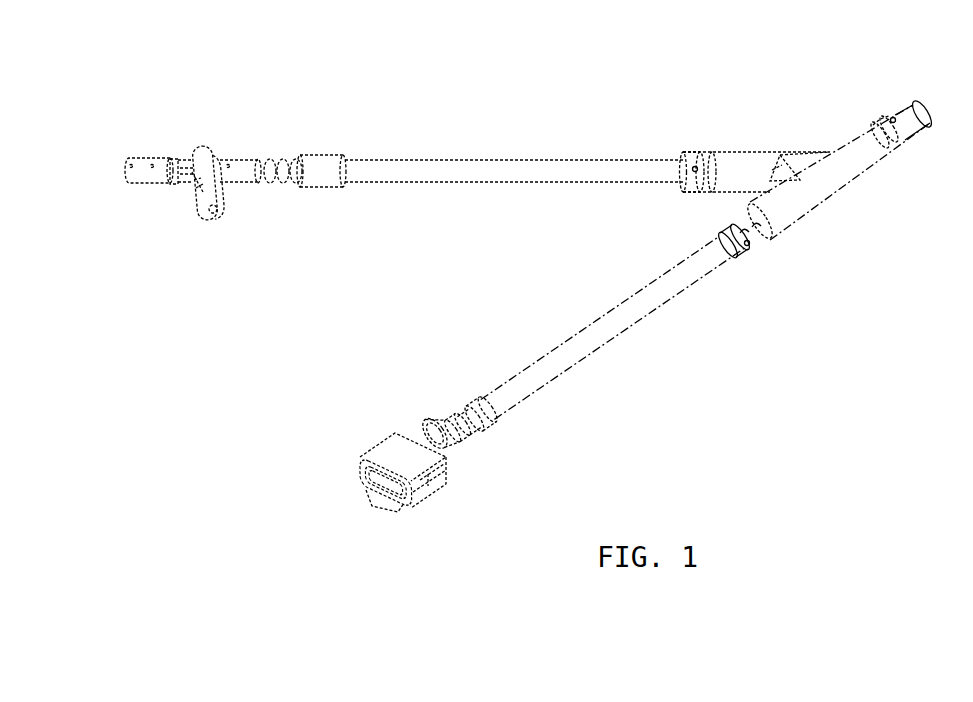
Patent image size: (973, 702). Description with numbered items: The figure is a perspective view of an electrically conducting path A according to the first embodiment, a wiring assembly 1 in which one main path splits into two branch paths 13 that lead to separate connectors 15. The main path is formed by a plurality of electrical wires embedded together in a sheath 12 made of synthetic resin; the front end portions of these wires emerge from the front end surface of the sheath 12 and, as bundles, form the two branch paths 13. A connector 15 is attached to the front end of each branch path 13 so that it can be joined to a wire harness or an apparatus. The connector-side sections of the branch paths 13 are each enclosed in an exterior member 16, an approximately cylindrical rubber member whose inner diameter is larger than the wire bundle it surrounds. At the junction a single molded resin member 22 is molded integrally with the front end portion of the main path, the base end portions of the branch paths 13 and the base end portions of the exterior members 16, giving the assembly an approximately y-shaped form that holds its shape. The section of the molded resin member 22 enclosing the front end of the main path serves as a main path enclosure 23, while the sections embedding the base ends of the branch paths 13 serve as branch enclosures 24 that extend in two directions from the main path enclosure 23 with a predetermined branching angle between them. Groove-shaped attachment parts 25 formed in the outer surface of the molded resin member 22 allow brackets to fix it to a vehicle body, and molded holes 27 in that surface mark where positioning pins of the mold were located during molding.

The sensor unit 1 is at (538, 296).
The sheath 12 is at (913, 108).
The branch path 13 is at (589, 121).
The connector 15 is at (151, 180).
The exterior member 16 is at (515, 168).
The molded resin member 22 is at (806, 162).
The main path enclosure 23 is at (872, 152).
The branch enclosure 24 is at (740, 162).
The attachment part 25 is at (905, 130).
The molded hole 27 is at (872, 124).
The electrically conducting path A is at (845, 342).